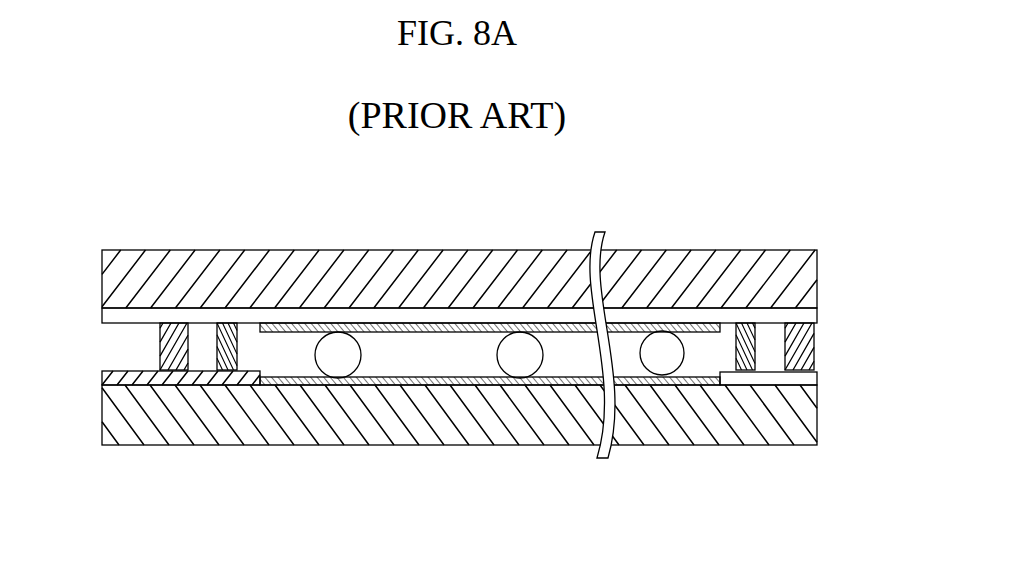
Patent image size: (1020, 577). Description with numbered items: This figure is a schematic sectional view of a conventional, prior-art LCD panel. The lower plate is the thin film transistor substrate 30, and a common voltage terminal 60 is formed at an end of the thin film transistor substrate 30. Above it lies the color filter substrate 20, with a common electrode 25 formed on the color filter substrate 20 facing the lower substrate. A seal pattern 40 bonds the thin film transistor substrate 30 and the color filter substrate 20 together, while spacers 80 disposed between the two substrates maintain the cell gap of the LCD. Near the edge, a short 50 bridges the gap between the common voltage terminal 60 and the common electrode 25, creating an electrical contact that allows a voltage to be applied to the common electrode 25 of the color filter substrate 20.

The color filter substrate 20 is at (805, 283).
The common electrode 25 is at (112, 315).
The thin film transistor substrate 30 is at (805, 413).
The seal pattern 40 is at (228, 358).
The short 50 is at (167, 352).
The common voltage terminal 60 is at (105, 382).
The spacers 80 is at (662, 347).